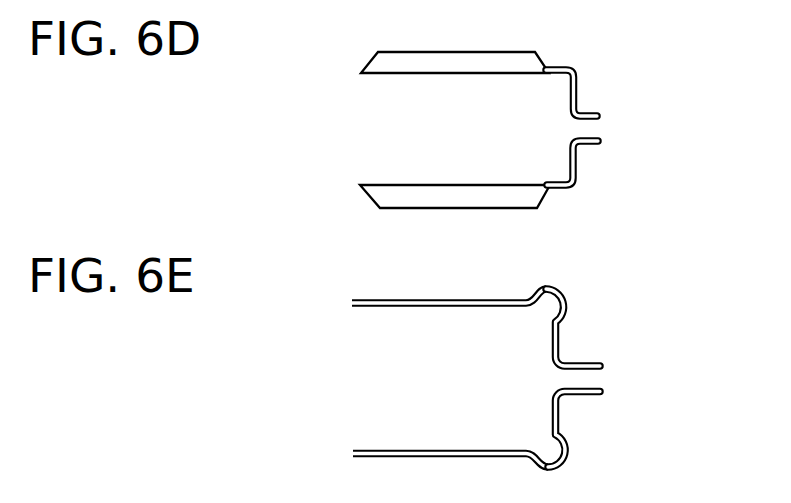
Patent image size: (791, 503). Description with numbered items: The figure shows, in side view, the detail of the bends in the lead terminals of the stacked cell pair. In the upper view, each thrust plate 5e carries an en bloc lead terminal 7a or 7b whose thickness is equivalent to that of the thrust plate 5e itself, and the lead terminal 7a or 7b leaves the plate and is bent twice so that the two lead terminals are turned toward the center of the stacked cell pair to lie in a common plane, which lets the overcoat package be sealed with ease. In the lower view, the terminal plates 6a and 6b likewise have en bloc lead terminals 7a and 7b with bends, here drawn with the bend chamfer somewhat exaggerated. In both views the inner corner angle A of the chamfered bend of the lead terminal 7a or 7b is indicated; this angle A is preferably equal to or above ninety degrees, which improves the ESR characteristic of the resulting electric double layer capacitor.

In FIG. 6D, the thrust plate 5e is at (407, 74).
In FIG. 6E, the terminal plate 6a is at (407, 307).
In FIG. 6E, the terminal plate 6b is at (398, 451).
In FIG. 6D, the lead terminal 7a is at (587, 111).
In FIG. 6E, the lead terminal 7a is at (586, 362).
In FIG. 6D, the lead terminal 7b is at (590, 147).
In FIG. 6E, the lead terminal 7b is at (587, 397).
In FIG. 6D, the inner corner angle A is at (563, 101).
In FIG. 6E, the inner corner angle A is at (535, 299).